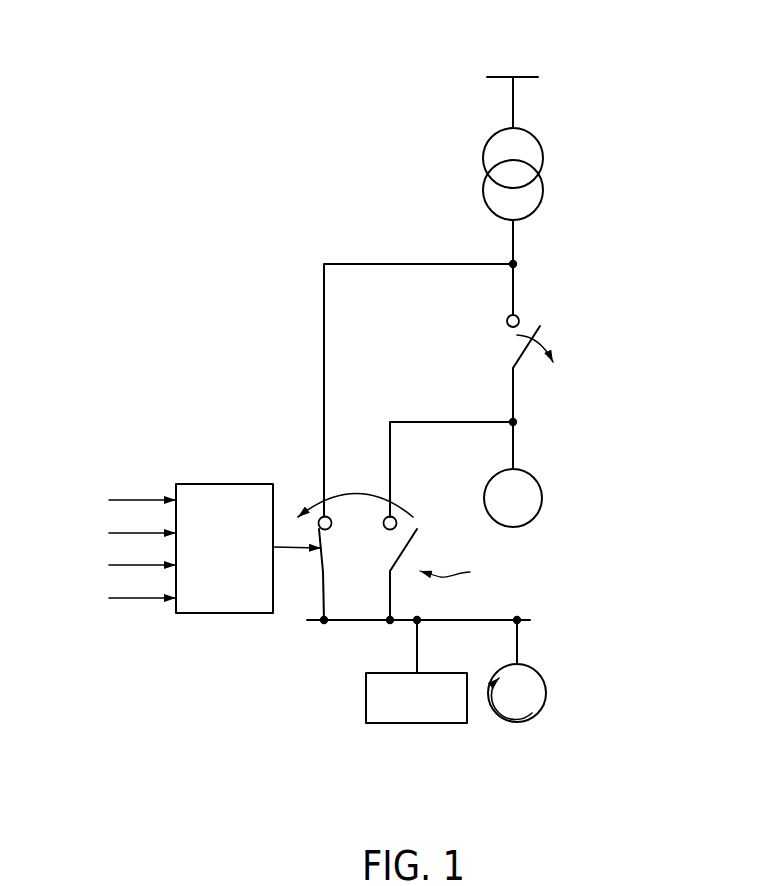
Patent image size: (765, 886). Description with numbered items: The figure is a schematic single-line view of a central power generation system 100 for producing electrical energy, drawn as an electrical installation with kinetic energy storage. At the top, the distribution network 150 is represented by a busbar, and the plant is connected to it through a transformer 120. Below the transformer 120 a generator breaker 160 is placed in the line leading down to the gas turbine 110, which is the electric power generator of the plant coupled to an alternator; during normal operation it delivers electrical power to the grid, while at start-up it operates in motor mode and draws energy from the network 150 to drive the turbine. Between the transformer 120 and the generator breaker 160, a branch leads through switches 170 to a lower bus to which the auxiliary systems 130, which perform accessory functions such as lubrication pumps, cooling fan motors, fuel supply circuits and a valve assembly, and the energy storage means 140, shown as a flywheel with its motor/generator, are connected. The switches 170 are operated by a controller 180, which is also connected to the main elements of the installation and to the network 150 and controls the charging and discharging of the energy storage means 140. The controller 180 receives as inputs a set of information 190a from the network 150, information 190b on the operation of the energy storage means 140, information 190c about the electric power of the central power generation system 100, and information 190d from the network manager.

The central power generation system 100 is at (178, 184).
The gas turbine 110 is at (542, 497).
The transformer 120 is at (544, 153).
The auxiliary systems 130 is at (416, 724).
The energy storage means 140 is at (546, 693).
The distribution network 150 is at (525, 75).
The generator breaker 160 is at (541, 327).
The switches 170 is at (347, 493).
The controller 180 is at (247, 536).
The information from the network 190a is at (113, 501).
The information related to the operation of the energy storage means 190b is at (113, 534).
The information about the central power generation system electric power 190c is at (113, 566).
The information from the network manager 190d is at (113, 599).